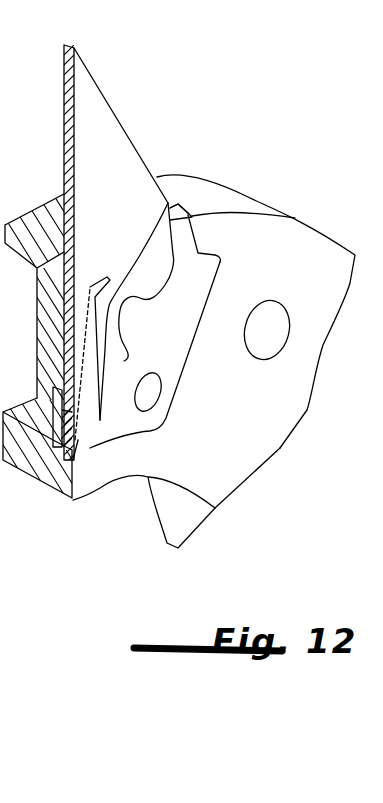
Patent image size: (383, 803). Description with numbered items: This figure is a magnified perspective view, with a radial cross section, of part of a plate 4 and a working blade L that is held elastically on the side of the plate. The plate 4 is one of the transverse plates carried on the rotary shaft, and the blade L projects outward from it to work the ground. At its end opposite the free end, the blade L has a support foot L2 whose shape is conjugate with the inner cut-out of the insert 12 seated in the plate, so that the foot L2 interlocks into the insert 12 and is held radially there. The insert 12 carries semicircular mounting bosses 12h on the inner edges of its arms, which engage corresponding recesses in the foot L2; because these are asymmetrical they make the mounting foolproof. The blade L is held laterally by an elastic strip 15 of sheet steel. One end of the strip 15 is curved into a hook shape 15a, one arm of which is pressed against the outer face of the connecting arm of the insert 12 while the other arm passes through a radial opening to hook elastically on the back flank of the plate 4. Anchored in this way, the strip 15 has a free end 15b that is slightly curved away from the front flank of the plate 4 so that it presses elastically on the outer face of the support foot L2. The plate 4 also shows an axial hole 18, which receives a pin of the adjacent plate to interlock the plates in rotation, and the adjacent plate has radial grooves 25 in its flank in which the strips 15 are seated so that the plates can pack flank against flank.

The radial groove 25 is at (55, 271).
The working blade L is at (127, 181).
The plate 4 is at (270, 255).
The insert 12 is at (200, 365).
The support foot L2 is at (172, 416).
The mounting boss 12h is at (118, 320).
The axial hole 18 is at (277, 337).
The elastic strip 15 is at (130, 432).
The free end of the strip 15b is at (168, 203).
The hook-shaped end 15a is at (71, 500).